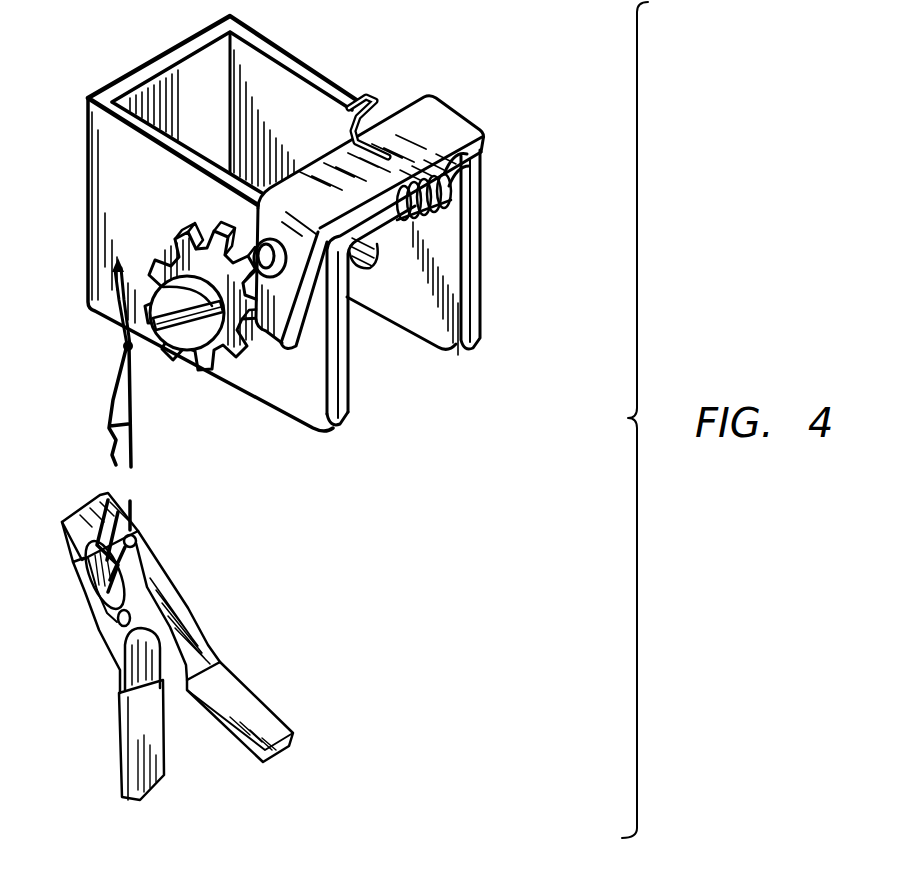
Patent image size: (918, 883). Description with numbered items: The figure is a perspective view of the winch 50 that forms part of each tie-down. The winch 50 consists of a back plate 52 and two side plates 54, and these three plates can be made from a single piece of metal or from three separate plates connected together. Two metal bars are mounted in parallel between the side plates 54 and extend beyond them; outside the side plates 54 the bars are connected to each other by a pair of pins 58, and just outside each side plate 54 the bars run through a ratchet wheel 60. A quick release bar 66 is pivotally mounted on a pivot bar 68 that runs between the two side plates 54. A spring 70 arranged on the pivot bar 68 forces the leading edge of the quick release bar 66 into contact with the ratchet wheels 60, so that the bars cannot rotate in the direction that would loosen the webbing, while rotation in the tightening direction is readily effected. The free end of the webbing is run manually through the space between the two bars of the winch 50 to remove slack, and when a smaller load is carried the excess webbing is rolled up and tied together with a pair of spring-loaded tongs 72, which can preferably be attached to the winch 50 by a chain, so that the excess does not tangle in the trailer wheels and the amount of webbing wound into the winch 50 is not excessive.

The winch 50 is at (313, 29).
The back plate 52 is at (170, 52).
The side plates 54 is at (321, 73).
The pins 58 is at (167, 238).
The ratchet wheel 60 is at (216, 352).
The quick release bar 66 is at (457, 118).
The pivot bar 68 is at (366, 254).
The spring 70 is at (445, 206).
The spring-loaded tongs 72 is at (166, 560).